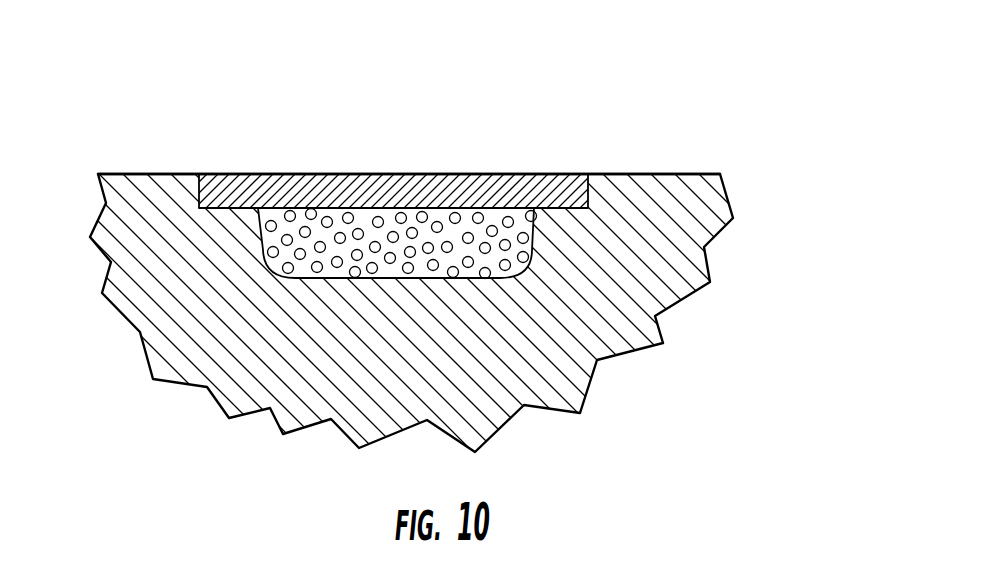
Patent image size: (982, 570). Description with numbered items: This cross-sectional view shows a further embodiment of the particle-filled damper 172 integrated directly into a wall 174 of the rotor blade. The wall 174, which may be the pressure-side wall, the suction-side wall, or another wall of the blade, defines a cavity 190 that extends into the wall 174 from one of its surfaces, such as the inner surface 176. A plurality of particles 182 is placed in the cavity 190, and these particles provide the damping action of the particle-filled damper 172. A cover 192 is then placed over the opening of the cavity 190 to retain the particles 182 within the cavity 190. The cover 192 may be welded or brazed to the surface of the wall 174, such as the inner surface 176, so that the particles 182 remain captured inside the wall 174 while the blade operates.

The particle-filled damper 172 is at (108, 106).
The wall 174 is at (672, 253).
The inner surface 176 is at (673, 174).
The particles 182 is at (289, 210).
The cavity 190 is at (362, 217).
The cover 192 is at (554, 174).